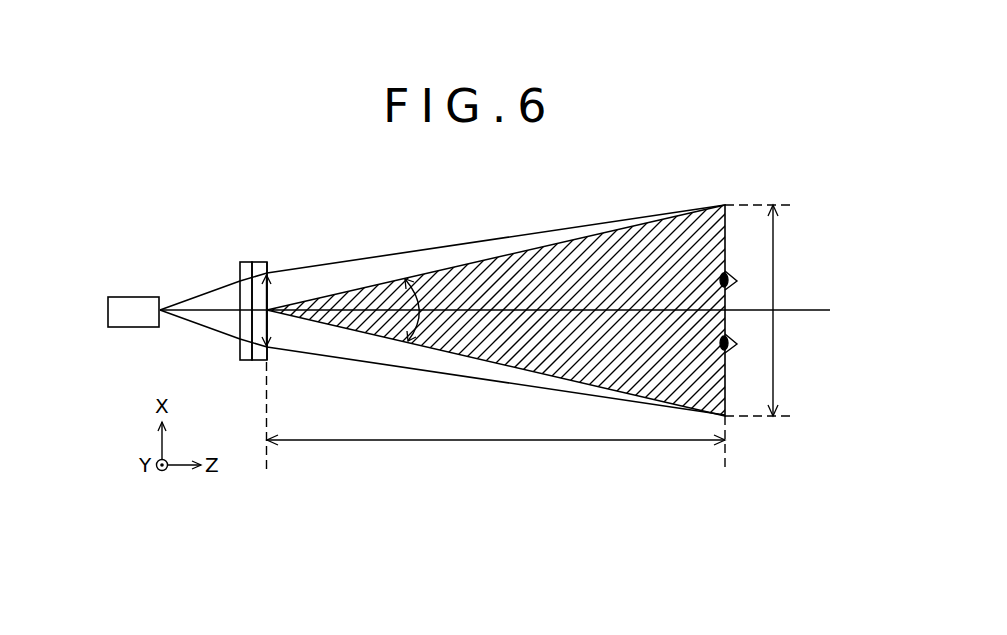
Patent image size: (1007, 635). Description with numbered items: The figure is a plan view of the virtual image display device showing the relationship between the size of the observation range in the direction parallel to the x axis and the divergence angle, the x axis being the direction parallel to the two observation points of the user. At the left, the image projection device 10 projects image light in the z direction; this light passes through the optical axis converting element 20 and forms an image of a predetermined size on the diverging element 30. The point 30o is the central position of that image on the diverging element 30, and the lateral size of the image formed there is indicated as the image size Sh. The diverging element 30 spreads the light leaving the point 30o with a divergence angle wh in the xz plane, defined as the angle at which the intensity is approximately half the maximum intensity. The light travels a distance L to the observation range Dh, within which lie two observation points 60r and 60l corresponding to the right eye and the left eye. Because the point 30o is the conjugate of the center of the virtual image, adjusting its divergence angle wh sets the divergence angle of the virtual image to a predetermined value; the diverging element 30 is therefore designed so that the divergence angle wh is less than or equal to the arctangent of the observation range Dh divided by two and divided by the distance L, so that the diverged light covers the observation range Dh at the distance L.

The image projection device 10 is at (120, 324).
The optical axis converting element 20 is at (247, 270).
The diverging element 30 is at (262, 270).
The central position of the image on the diverging element 30o is at (267, 313).
The size of the image on the diverging element Sh is at (269, 301).
The divergence angle wh is at (428, 287).
The distance L is at (496, 455).
The observation range Dh is at (775, 223).
The observation point 60l is at (737, 281).
The observation point 60r is at (737, 344).